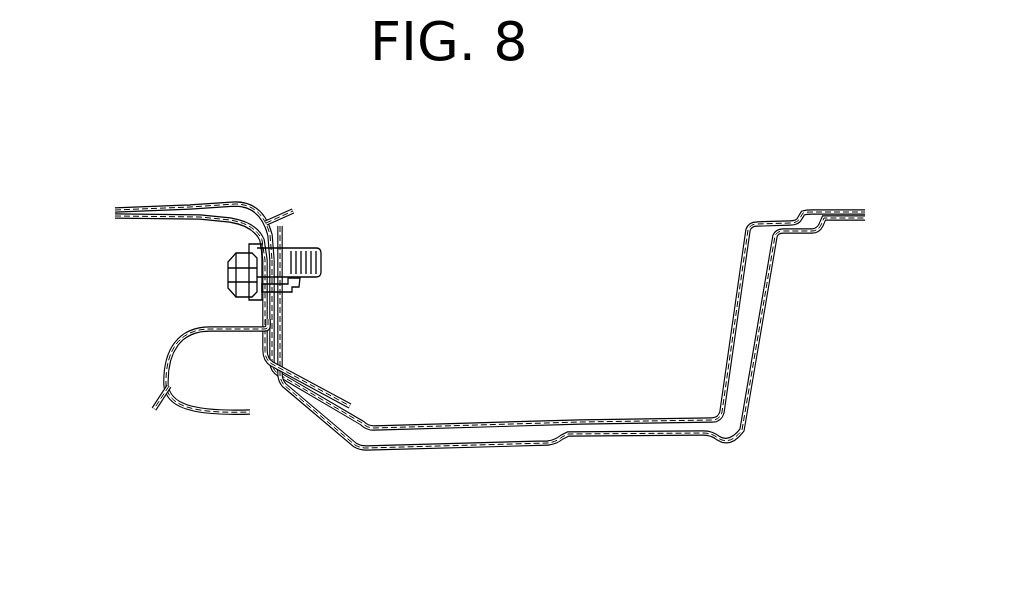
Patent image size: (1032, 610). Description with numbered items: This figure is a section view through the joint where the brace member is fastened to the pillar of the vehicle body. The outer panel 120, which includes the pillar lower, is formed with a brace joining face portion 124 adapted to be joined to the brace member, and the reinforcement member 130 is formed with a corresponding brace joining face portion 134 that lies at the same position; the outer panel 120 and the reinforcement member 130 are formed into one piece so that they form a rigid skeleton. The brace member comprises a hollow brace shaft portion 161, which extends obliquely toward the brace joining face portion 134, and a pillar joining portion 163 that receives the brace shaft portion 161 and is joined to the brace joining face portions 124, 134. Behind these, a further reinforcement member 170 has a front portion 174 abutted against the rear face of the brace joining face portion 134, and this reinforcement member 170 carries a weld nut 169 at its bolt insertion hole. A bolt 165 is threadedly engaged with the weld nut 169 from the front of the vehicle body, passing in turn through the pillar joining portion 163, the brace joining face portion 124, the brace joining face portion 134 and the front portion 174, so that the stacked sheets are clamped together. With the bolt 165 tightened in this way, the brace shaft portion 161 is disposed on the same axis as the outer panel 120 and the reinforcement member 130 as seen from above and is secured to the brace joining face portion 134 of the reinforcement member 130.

The outer panel 120 is at (735, 447).
The brace joining face portion 124 is at (266, 366).
The reinforcement member 130 is at (518, 418).
The brace joining face portion 134 is at (258, 212).
The brace shaft portion 161 is at (212, 378).
The pillar joining portion 163 is at (252, 322).
The bolt 165 is at (230, 272).
The weld nut 169 is at (282, 238).
The reinforcement member 170 is at (284, 306).
The front portion 174 is at (300, 305).